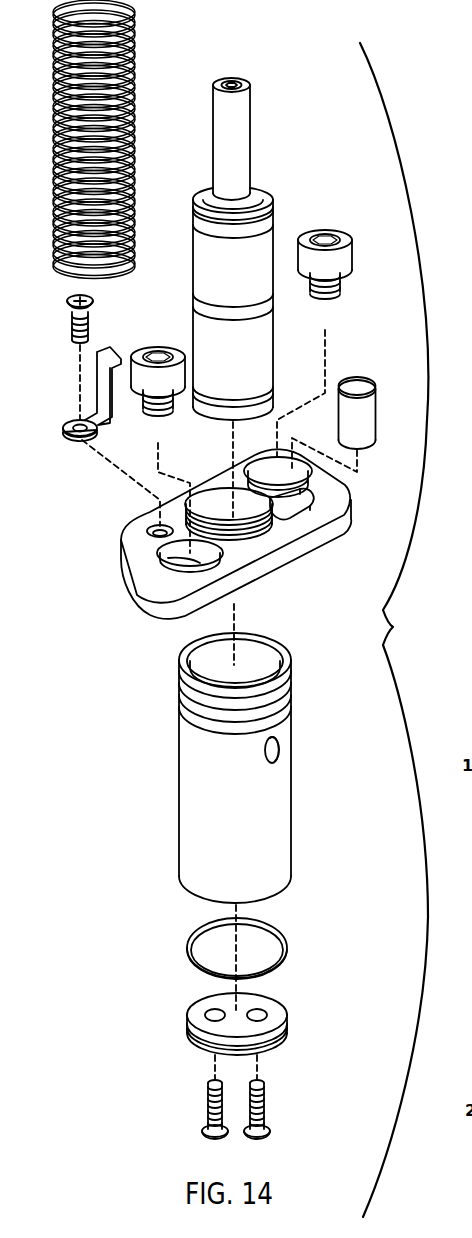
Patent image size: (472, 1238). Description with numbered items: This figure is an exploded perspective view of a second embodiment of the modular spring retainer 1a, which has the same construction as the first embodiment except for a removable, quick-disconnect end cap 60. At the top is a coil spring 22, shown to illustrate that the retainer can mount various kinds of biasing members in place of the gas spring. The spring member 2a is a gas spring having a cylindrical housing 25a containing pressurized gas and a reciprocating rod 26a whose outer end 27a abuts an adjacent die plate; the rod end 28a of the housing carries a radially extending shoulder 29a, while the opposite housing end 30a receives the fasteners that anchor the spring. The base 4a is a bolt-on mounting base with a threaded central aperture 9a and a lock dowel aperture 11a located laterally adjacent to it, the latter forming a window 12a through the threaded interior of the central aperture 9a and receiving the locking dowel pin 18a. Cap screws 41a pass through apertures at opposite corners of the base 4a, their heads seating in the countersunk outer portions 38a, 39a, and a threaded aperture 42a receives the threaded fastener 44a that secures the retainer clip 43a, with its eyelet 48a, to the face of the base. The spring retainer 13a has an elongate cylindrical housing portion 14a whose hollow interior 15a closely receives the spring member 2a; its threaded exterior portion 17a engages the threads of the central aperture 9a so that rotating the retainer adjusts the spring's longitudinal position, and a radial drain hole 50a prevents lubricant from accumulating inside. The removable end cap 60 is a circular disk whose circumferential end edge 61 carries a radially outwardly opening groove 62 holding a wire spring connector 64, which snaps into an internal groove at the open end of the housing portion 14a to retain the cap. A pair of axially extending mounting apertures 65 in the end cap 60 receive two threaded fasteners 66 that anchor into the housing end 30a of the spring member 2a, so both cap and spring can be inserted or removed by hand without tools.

The coil spring 22 is at (135, 65).
The spring member 2a is at (274, 180).
The rod 26a is at (250, 120).
The outer end of rod 27a is at (236, 78).
The cylindrical housing 25a is at (200, 270).
The rod end of housing 28a is at (200, 212).
The radially extending shoulder 29a is at (272, 200).
The housing end 30a is at (283, 402).
The cap screws 41a is at (345, 232).
The threaded fastener 44a is at (72, 302).
The retainer clip 43a is at (97, 352).
The bracket eye 48a is at (78, 424).
The locking dowel pin 18a is at (362, 377).
The base 4a is at (125, 548).
The central aperture 9a is at (222, 480).
The lock dowel aperture 11a is at (315, 486).
The countersunk outer portion 38a is at (285, 458).
The window 12a is at (265, 548).
The countersunk outer portion 39a is at (170, 556).
The threaded aperture 42a is at (155, 524).
The housing portion 14a is at (282, 832).
The spring retainer 13a is at (182, 668).
The hollow interior 15a is at (210, 655).
The threaded exterior portion 17a is at (290, 680).
The drain hole 50a is at (285, 755).
The wire spring connector 64 is at (285, 935).
The removable end cap 60 is at (272, 1010).
The mounting apertures 65 is at (212, 1010).
The circumferential end edge 61 is at (195, 1040).
The radially outwardly opening groove 62 is at (288, 1030).
The threaded fasteners 66 is at (205, 1138).
The modular spring retainer 1a is at (394, 630).